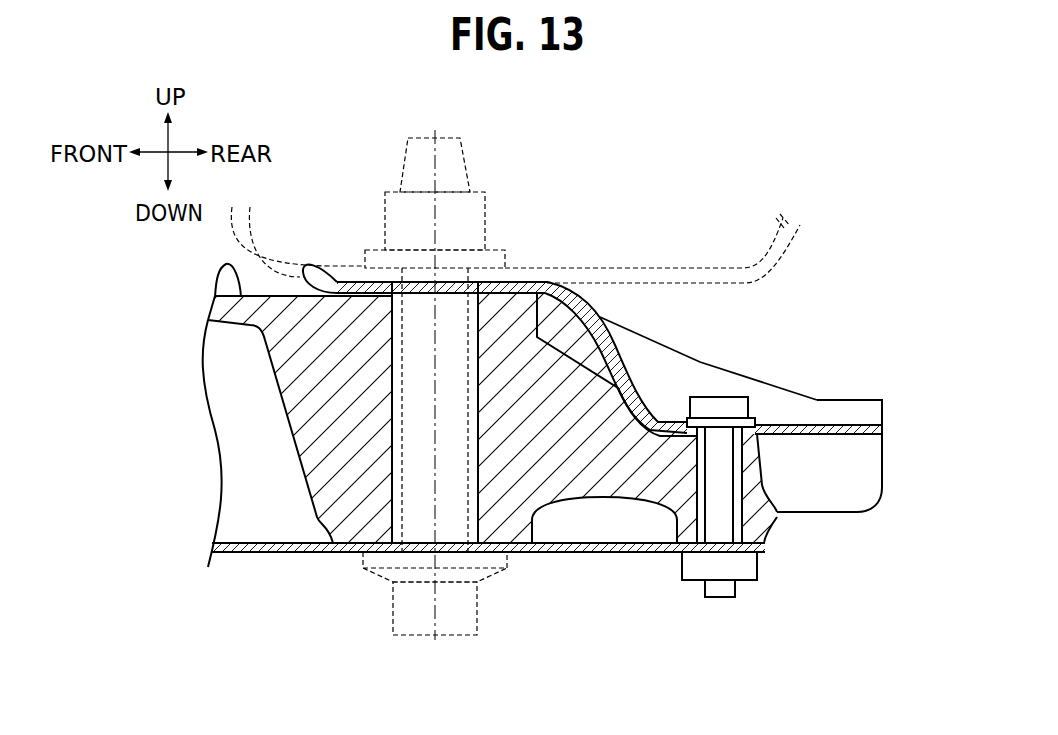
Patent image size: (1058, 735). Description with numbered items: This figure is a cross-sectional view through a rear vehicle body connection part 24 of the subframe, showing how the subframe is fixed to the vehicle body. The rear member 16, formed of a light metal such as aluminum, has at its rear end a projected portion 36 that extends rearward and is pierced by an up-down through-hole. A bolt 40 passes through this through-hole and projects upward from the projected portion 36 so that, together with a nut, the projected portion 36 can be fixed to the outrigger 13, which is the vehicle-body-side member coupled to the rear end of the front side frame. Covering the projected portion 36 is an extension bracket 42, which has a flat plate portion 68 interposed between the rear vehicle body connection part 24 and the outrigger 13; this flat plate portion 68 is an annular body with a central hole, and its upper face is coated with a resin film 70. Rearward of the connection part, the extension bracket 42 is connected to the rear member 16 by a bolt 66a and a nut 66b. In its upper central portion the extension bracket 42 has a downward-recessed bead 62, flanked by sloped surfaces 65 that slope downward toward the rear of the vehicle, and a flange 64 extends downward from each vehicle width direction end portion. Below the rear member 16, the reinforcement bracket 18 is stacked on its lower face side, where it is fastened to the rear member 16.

The outrigger 13 is at (778, 256).
The rear member 16 is at (216, 274).
The reinforcement bracket 18 is at (273, 553).
The rear vehicle body connection part 24 is at (463, 610).
The projected portion 36 is at (772, 482).
The bolt 40 is at (392, 428).
The extension bracket 42 is at (873, 393).
The bead 62 is at (823, 402).
The flange 64 is at (852, 462).
The sloped surface 65 is at (663, 348).
The bolt 66a is at (718, 407).
The nut 66b is at (745, 566).
The flat plate portion 68 is at (307, 262).
The resin film 70 is at (517, 282).